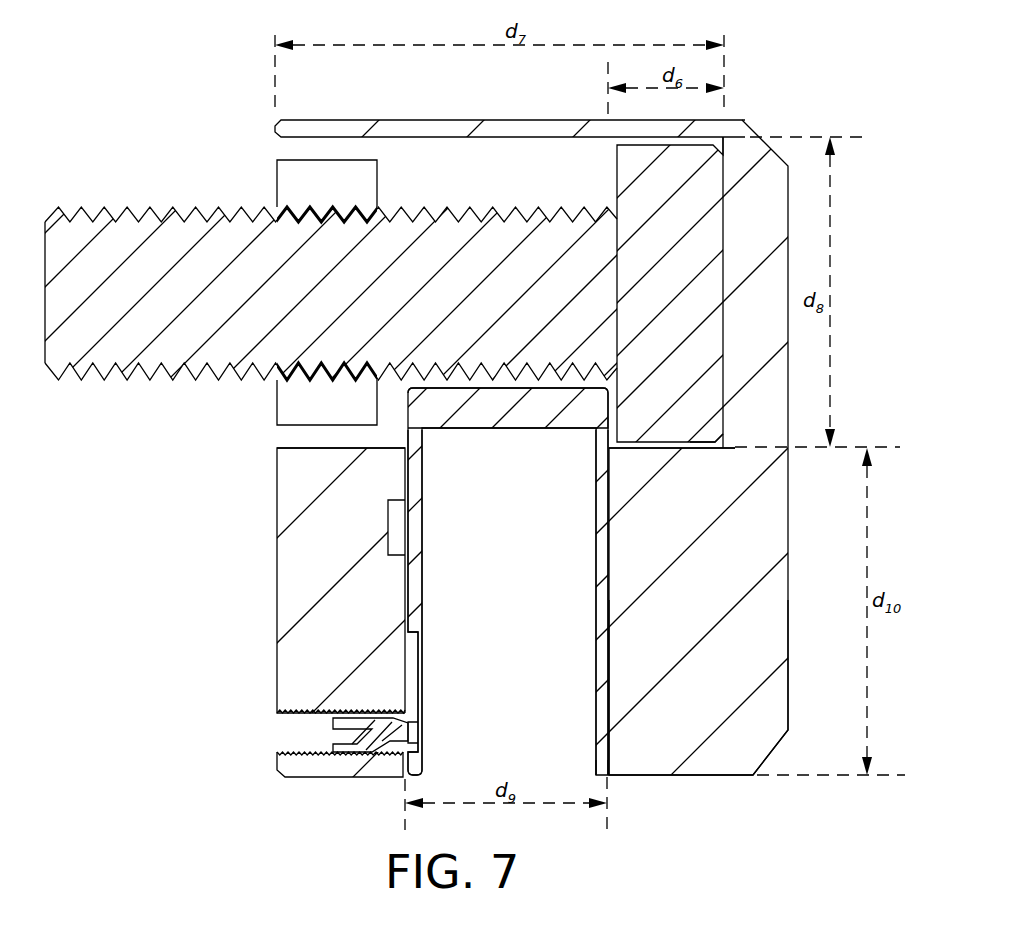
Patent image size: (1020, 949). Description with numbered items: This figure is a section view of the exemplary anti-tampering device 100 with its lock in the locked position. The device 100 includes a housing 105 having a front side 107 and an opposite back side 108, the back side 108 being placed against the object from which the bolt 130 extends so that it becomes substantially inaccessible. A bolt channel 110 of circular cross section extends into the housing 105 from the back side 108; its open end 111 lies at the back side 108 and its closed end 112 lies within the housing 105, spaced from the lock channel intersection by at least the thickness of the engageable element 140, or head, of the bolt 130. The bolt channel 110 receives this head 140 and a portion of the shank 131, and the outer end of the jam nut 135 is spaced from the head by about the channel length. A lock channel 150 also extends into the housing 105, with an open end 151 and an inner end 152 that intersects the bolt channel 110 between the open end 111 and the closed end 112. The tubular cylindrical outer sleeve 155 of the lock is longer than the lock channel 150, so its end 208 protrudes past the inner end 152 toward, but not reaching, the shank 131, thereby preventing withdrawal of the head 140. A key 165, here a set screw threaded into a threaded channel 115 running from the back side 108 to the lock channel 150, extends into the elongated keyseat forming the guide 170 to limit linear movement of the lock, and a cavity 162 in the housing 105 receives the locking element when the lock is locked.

The anti-tampering device 100 is at (510, 474).
The housing 105 is at (738, 130).
The front side 107 is at (790, 652).
The back side 108 is at (275, 583).
The bolt channel 110 is at (310, 150).
The open end 111 is at (277, 437).
The closed end 112 is at (725, 435).
The threaded channel 115 is at (303, 752).
The bolt 130 is at (490, 474).
The shank 131 is at (203, 383).
The jam nut 135 is at (313, 190).
The engageable element 140 is at (665, 178).
The lock channel 150 is at (510, 474).
The open end 151 is at (612, 777).
The inner end 152 is at (612, 452).
The outer sleeve 155 is at (597, 660).
The cavity 162 is at (402, 528).
The key 165 is at (415, 730).
The guide 170 is at (418, 692).
The end of the outer sleeve 208 is at (532, 390).